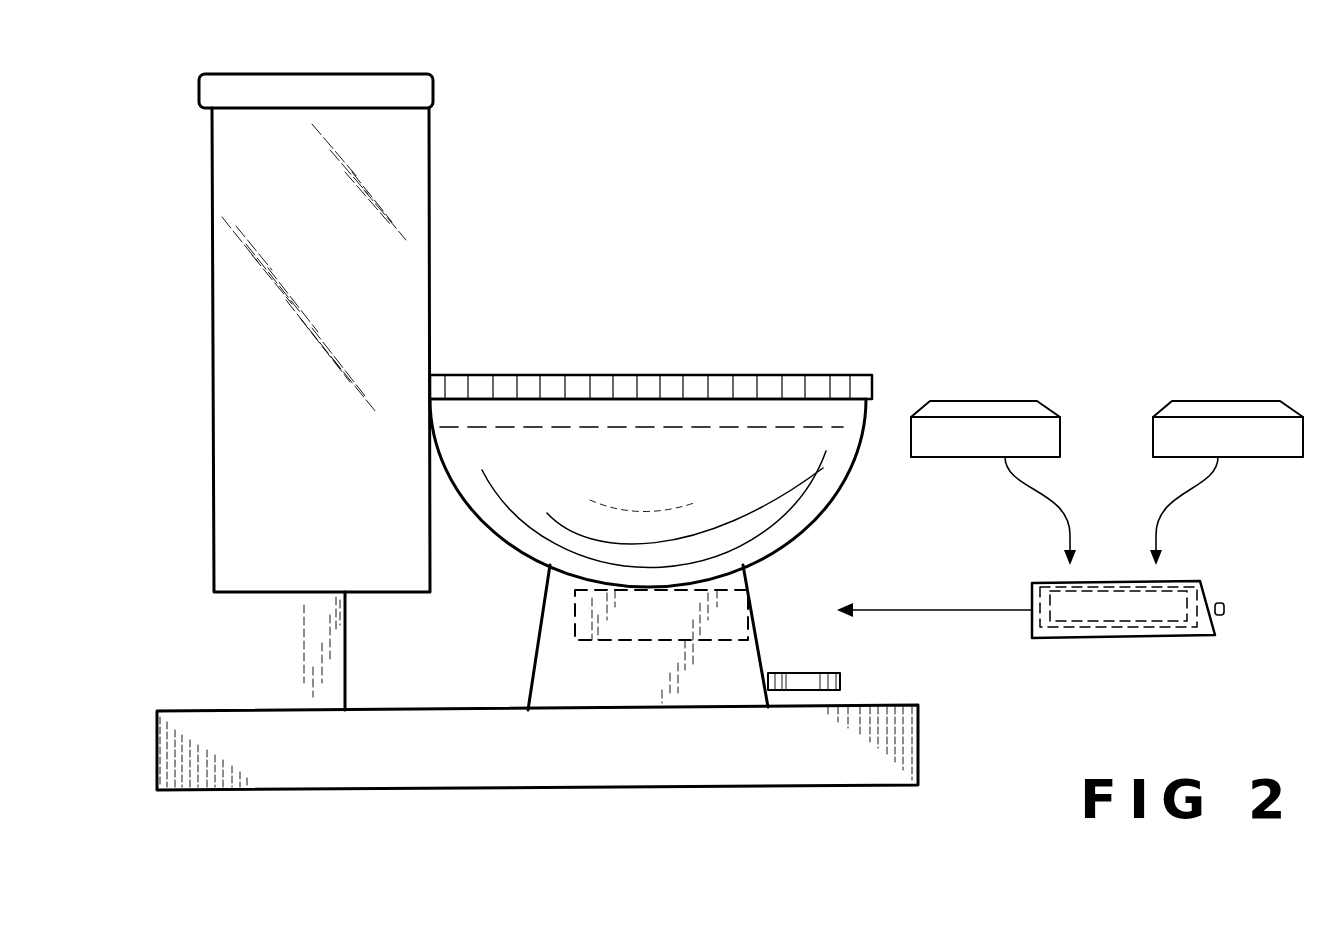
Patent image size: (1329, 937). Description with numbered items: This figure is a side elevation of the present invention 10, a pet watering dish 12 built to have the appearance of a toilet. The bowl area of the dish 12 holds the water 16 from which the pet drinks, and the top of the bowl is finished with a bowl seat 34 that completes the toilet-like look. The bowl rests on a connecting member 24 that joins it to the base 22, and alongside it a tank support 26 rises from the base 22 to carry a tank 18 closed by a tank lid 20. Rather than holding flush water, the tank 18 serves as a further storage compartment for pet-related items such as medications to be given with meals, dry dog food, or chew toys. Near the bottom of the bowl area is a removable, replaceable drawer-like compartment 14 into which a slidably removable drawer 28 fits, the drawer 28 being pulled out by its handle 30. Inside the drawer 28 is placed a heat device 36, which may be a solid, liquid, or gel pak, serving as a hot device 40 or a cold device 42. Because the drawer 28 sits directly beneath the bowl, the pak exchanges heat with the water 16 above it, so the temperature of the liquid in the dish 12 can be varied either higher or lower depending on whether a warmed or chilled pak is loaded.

The present invention 10 is at (710, 187).
The dish or bowl 12 is at (825, 450).
The compartment 14 is at (730, 605).
The water 16 is at (845, 413).
The tank 18 is at (395, 263).
The tank lid 20 is at (375, 88).
The base 22 is at (905, 740).
The connecting member 24 is at (545, 640).
The tank support 26 is at (328, 650).
The drawer 28 is at (1200, 590).
The handle 30 is at (1223, 613).
The bowl seat 34 is at (773, 378).
The heat device 36 is at (1120, 607).
The hot device 40 is at (975, 405).
The cold device 42 is at (1235, 405).